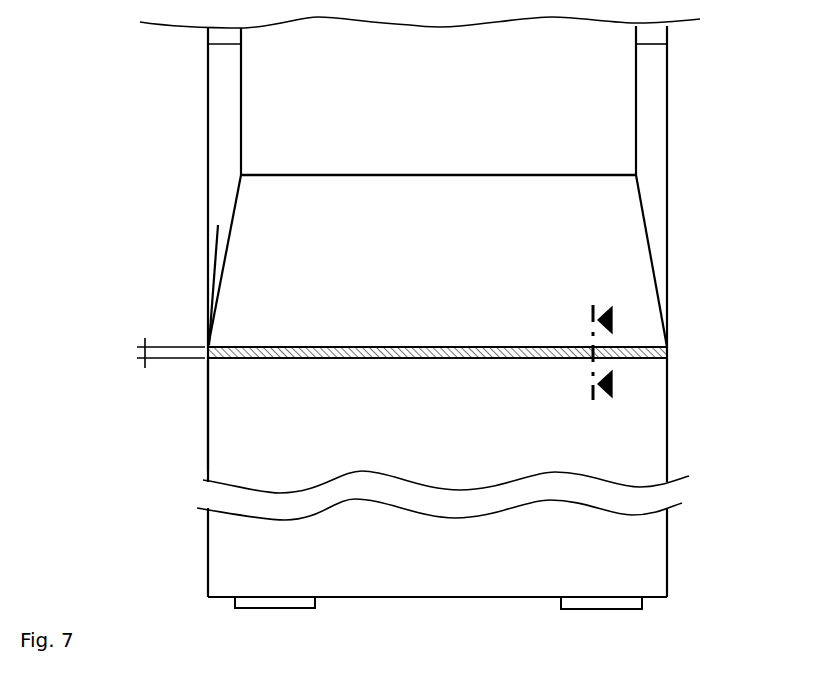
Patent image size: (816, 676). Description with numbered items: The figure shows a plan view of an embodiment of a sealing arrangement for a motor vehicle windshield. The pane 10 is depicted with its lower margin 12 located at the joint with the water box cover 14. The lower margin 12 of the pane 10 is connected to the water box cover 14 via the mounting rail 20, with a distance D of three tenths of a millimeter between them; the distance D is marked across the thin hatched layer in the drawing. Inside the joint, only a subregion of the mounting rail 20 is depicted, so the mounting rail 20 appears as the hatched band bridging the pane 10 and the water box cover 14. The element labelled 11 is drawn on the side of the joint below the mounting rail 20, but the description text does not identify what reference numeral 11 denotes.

The pane 10 is at (638, 248).
The lower wall portion 11 is at (225, 377).
The lower margin 12 is at (230, 333).
The water box cover 14 is at (608, 421).
The mounting rail 20 is at (668, 347).
The distance D is at (161, 353).